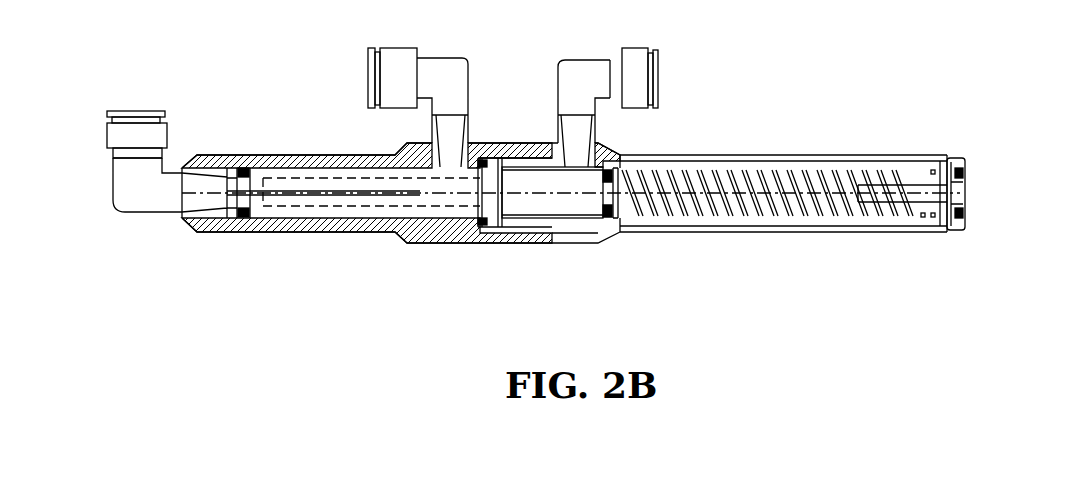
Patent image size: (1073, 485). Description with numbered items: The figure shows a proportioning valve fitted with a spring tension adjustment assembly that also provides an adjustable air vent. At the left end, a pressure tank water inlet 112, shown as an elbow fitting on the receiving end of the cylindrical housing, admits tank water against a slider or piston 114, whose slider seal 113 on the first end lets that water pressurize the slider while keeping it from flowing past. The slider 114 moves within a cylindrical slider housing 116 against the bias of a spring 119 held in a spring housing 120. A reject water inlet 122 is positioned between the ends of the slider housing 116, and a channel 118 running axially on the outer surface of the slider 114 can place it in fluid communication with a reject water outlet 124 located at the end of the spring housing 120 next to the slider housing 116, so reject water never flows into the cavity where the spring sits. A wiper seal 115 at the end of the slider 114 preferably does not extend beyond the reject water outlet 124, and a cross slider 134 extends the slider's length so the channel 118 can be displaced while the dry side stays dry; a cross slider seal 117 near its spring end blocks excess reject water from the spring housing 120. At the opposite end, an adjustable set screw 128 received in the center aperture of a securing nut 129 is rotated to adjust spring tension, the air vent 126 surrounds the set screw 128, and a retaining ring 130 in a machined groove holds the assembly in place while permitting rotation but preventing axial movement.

The pressure tank water inlet 112 is at (137, 110).
The slider seal 113 is at (247, 220).
The slider or piston 114 is at (300, 175).
The O-ring seal or wiper seal 115 is at (487, 224).
The slider housing 116 is at (490, 143).
The cross slider seal 117 is at (606, 222).
The channel 118 is at (380, 196).
The spring 119 is at (722, 182).
The spring housing 120 is at (762, 232).
The reject water inlet 122 is at (427, 60).
The reject water outlet 124 is at (660, 63).
The air vent 126 is at (952, 170).
The adjustable set screw 128 is at (955, 227).
The securing nut 129 is at (963, 168).
The retaining ring 130 is at (963, 205).
The cross slider 134 is at (568, 208).